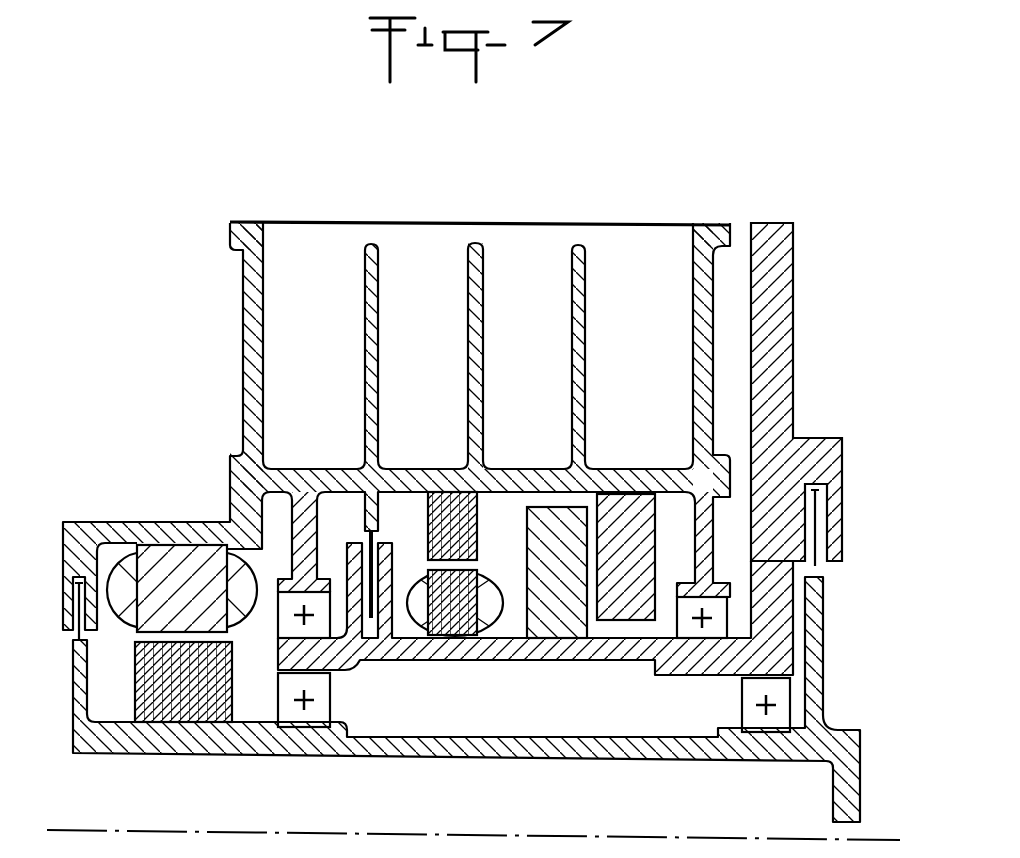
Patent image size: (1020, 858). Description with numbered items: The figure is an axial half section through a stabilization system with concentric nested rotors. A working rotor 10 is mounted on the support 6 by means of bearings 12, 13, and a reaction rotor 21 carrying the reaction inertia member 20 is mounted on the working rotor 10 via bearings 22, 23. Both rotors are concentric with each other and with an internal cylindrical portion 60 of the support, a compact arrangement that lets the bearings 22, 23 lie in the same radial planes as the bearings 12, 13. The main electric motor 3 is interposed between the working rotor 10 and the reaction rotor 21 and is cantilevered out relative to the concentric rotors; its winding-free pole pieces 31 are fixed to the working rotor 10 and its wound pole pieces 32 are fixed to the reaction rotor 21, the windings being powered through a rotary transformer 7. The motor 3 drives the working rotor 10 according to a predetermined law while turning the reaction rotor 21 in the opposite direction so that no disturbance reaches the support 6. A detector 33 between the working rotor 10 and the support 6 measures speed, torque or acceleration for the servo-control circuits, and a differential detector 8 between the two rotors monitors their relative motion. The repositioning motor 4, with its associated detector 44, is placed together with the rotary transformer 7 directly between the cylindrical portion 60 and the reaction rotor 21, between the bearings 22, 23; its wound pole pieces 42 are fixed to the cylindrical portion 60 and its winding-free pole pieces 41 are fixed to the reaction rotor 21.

The main electric motor 3 is at (176, 636).
The repositioning motor 4 is at (487, 571).
The support 6 is at (775, 327).
The rotary transformer 7 is at (580, 503).
The differential detector 8 is at (63, 590).
The working rotor 10 is at (530, 745).
The bearing 12 is at (330, 708).
The bearing 13 is at (742, 704).
The reaction inertia member 20 is at (355, 343).
The reaction rotor 21 is at (517, 470).
The bearing 22 is at (288, 618).
The bearing 23 is at (715, 603).
The winding-free pole pieces 31 is at (187, 705).
The wound pole pieces 32 is at (177, 565).
The detector 33 is at (820, 522).
The winding-free pole pieces 41 is at (431, 495).
The wound pole pieces 42 is at (459, 627).
The detector 44 is at (373, 540).
The cylindrical support portion 60 is at (598, 647).